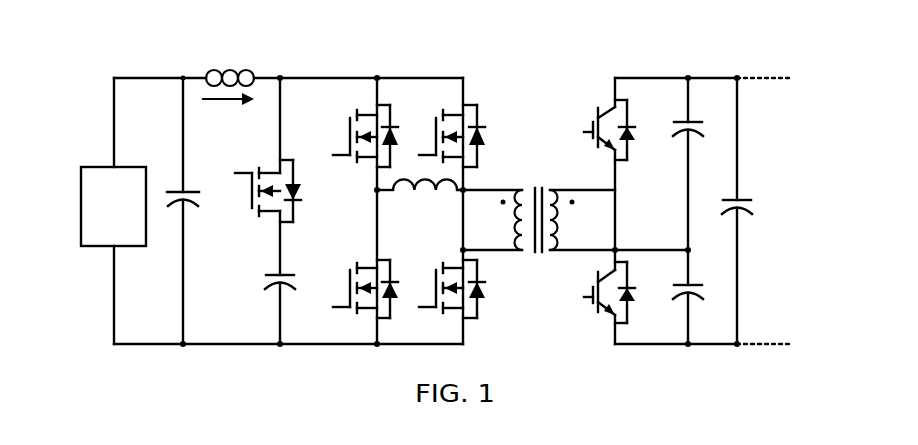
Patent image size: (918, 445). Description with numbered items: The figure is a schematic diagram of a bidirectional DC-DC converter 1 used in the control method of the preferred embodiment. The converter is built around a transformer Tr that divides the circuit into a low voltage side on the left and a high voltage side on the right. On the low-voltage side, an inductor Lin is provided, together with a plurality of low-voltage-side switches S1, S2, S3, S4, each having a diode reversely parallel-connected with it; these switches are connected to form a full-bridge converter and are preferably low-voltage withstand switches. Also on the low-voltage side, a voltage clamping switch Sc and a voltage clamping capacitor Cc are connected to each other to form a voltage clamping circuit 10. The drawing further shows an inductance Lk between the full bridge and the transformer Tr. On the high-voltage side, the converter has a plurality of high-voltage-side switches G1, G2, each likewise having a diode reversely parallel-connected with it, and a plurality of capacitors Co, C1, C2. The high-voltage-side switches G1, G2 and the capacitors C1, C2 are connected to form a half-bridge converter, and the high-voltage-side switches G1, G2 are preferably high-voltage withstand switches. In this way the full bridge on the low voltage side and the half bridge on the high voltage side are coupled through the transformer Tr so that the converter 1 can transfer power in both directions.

The bidirectional DC-DC converter 1 is at (520, 70).
The voltage clamping circuit 10 is at (292, 112).
The inductor Lin is at (230, 65).
The voltage clamping switch Sc is at (268, 184).
The voltage clamping capacitor Cc is at (265, 286).
The low-voltage-side switch S1 is at (357, 136).
The low-voltage-side switch S2 is at (357, 289).
The low-voltage-side switch S3 is at (444, 136).
The low-voltage-side switch S4 is at (444, 289).
The leakage inductor Lk is at (417, 201).
The transformer Tr is at (536, 208).
The high-voltage-side switch G1 is at (594, 164).
The high-voltage-side switch G2 is at (594, 297).
The capacitor C1 is at (674, 164).
The capacitor C2 is at (674, 297).
The capacitor Co is at (725, 211).